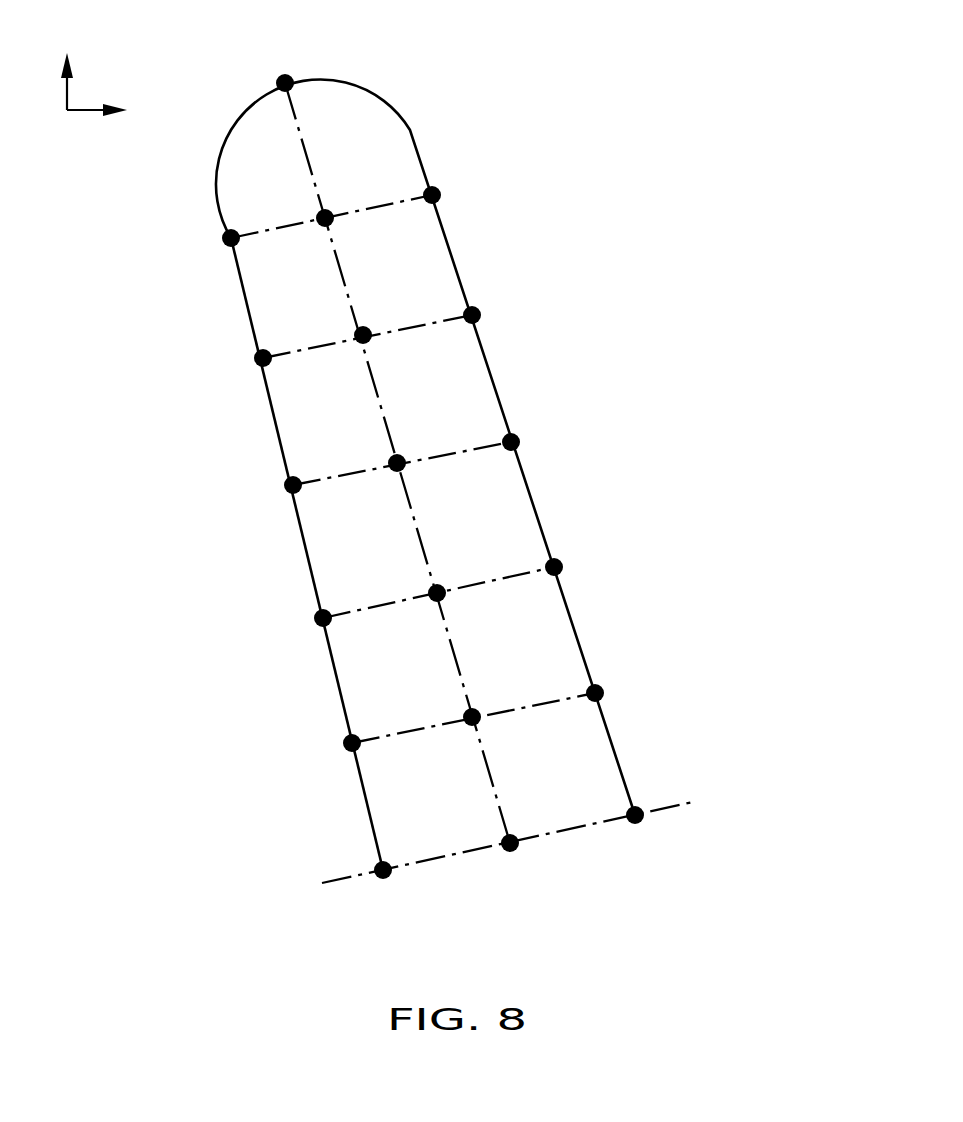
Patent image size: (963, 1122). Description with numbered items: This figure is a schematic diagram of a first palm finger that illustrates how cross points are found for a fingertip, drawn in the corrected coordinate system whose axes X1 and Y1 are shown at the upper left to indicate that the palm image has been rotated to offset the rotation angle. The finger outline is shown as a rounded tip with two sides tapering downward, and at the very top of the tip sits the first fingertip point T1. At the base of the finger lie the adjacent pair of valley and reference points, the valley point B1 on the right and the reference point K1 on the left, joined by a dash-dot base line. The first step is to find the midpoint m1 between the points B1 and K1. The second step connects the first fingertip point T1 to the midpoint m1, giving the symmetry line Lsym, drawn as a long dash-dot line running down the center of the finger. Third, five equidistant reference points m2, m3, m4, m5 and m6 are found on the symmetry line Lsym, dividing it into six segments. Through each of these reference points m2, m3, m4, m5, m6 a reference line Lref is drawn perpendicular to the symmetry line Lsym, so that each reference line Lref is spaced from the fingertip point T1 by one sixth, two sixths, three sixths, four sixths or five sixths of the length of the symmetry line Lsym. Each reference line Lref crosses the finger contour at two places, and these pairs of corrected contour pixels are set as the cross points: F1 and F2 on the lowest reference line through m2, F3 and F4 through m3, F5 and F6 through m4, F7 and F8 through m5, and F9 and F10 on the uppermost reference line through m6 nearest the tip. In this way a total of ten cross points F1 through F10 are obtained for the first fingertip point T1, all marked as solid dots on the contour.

The first fingertip point T1 is at (301, 63).
The reference point K1 is at (394, 890).
The valley point B1 is at (649, 840).
The cross point F1 is at (330, 742).
The cross point F2 is at (614, 678).
The cross point F3 is at (303, 617).
The cross point F4 is at (574, 554).
The cross point F5 is at (269, 484).
The cross point F6 is at (531, 428).
The cross point F7 is at (243, 359).
The cross point F8 is at (492, 304).
The cross point F9 is at (212, 239).
The cross point F10 is at (458, 180).
The midpoint m1 is at (528, 864).
The reference point m2 is at (492, 702).
The reference point m3 is at (456, 575).
The reference point m4 is at (418, 446).
The reference point m5 is at (385, 314).
The reference point m6 is at (347, 199).
The symmetry line Lsym is at (301, 138).
The reference line Lref is at (540, 704).
The X1 axis of the corrected coordinate system X1 is at (119, 109).
The Y1 axis of the corrected coordinate system Y1 is at (70, 62).